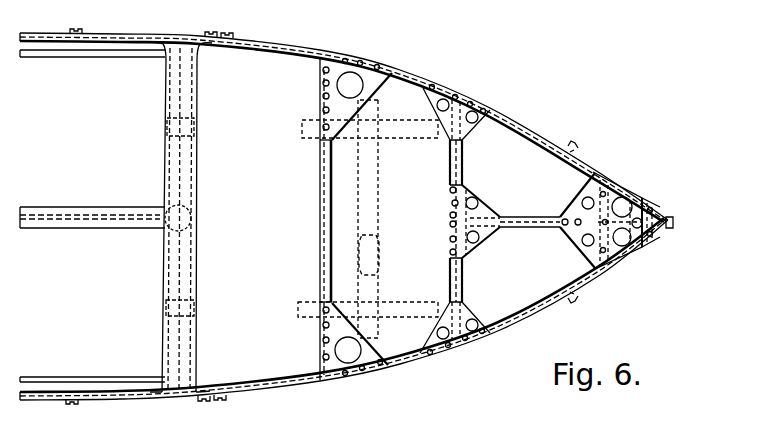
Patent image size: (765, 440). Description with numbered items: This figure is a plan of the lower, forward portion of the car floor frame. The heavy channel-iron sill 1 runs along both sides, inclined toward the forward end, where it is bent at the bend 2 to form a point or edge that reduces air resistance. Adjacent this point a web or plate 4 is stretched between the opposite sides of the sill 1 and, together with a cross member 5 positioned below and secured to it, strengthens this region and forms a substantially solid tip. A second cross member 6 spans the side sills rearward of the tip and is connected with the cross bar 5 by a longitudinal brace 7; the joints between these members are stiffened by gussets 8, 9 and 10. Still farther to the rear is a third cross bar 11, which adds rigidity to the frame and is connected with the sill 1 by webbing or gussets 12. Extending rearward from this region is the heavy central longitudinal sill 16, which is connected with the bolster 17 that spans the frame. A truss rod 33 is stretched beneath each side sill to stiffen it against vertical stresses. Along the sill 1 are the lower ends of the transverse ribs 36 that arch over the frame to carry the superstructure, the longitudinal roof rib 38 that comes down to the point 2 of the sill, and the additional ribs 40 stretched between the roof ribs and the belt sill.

The channel-iron sill 1 is at (108, 44).
The bend 2 is at (663, 238).
The web or plate 4 is at (613, 192).
The cross member 5 is at (613, 252).
The second cross member 6 is at (455, 287).
The longitudinal brace 7 is at (535, 218).
The gusset 8 is at (475, 102).
The gusset 9 is at (450, 192).
The gusset 10 is at (457, 350).
The third cross bar 11 is at (318, 226).
The webbing or gussets 12 is at (367, 80).
The central longitudinal sill 16 is at (93, 210).
The bolster 17 is at (185, 166).
The truss rod 33 is at (103, 375).
The transverse ribs 36 is at (222, 45).
The longitudinal roof rib 38 is at (670, 218).
The ribs 40 is at (580, 150).